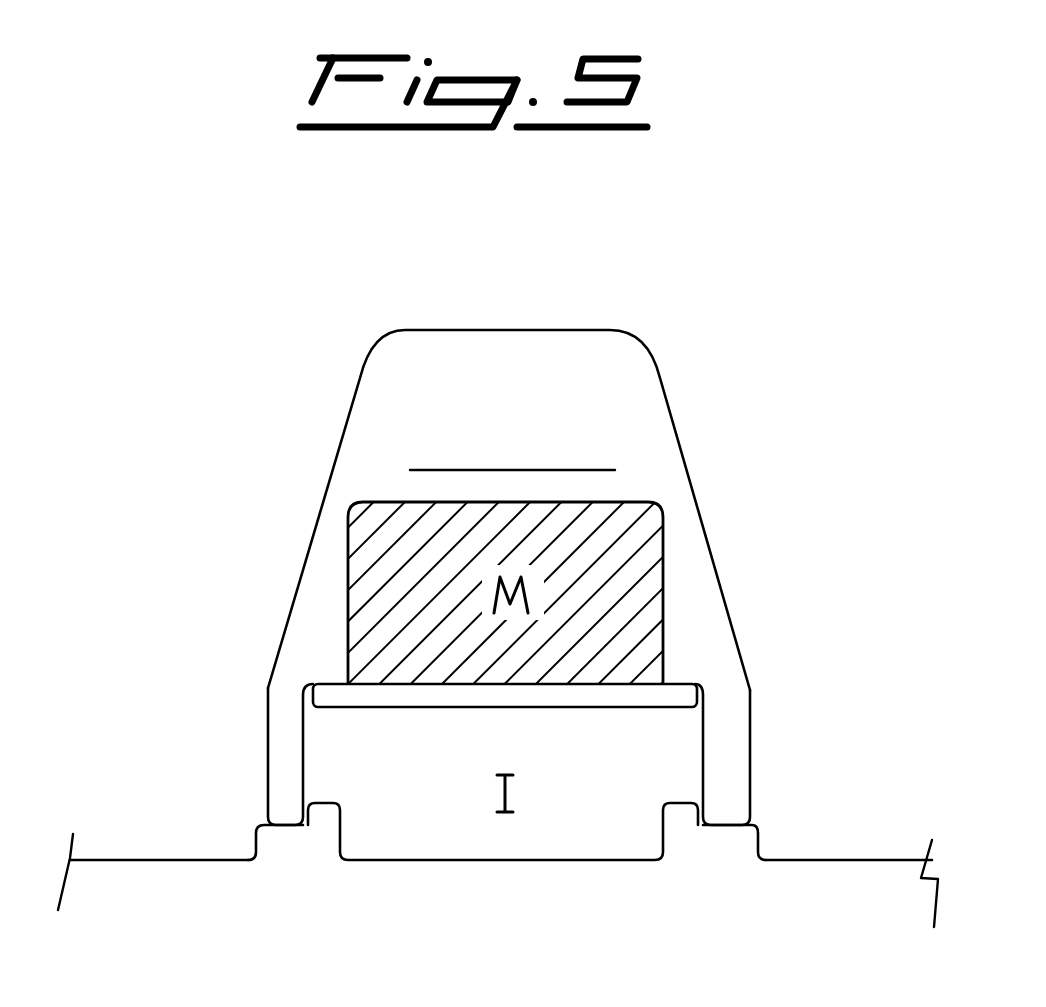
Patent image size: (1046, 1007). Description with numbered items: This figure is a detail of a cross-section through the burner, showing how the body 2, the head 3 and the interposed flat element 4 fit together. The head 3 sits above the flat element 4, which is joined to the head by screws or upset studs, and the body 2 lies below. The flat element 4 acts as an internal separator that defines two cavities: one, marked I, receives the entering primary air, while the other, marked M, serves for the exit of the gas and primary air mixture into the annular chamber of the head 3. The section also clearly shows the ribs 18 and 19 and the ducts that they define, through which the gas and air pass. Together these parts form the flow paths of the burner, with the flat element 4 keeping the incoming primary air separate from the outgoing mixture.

The body 2 is at (448, 977).
The head 3 is at (697, 407).
The interposed flat element 4 is at (652, 700).
The rib 18 is at (290, 837).
The rib 19 is at (276, 771).